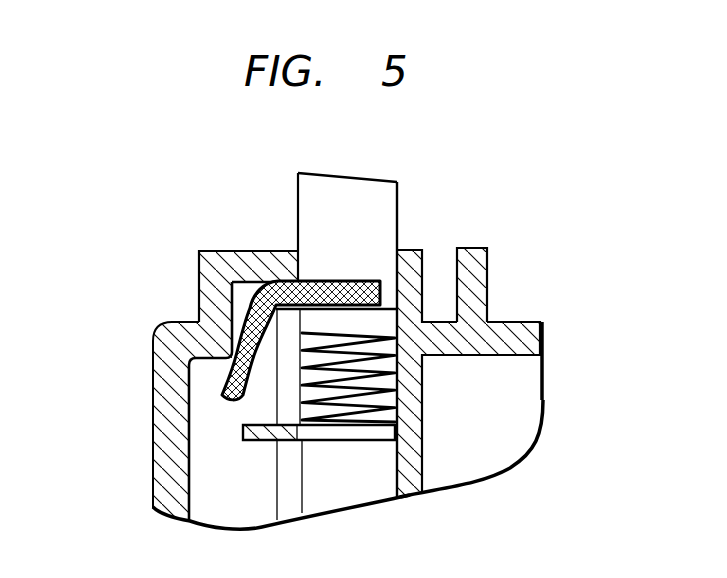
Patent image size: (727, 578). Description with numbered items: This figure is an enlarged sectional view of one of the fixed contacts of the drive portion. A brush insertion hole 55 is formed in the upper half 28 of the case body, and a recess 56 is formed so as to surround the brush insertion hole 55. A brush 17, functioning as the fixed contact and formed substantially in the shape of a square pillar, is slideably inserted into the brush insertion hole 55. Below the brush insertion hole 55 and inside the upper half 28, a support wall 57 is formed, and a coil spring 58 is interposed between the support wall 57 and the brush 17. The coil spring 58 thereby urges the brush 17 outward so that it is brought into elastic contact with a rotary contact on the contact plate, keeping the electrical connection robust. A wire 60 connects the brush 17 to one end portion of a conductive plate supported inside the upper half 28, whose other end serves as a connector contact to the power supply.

The brush (fixed contact) 17 is at (342, 186).
The upper half 28 is at (155, 397).
The brush insertion hole 55 is at (298, 262).
The recess 56 is at (456, 272).
The support wall 57 is at (360, 441).
The coil spring 58 is at (392, 380).
The wire 60 is at (247, 296).